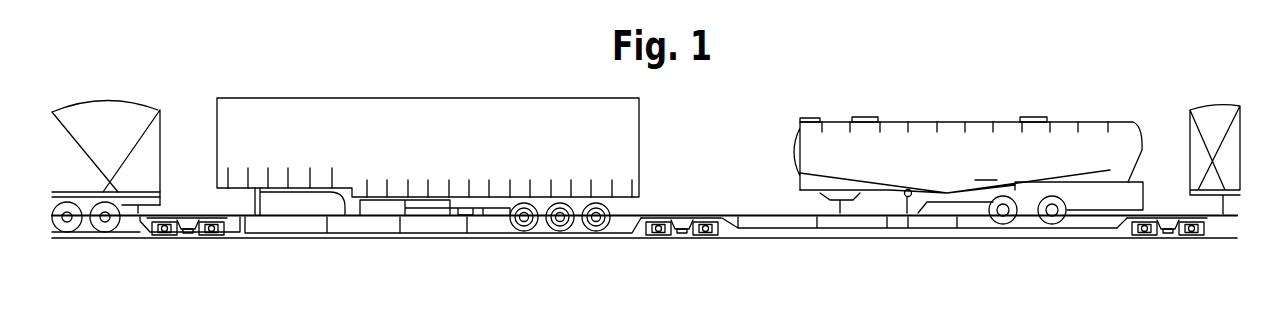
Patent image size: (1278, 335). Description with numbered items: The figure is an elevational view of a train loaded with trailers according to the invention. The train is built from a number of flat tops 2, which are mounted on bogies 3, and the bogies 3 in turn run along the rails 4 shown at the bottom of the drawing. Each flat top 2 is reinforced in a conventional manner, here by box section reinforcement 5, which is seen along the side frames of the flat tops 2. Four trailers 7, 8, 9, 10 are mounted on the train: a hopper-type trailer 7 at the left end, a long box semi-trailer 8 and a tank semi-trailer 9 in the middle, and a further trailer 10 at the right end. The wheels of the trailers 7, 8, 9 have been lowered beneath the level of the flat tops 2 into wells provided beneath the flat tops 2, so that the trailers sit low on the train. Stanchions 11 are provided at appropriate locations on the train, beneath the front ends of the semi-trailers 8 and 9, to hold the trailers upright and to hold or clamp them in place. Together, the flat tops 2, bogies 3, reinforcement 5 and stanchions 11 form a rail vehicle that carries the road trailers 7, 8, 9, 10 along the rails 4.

The flat top 2 is at (428, 218).
The bogie 3 is at (218, 240).
The rail 4 is at (1084, 238).
The box section reinforcement 5 is at (467, 225).
The trailer 7 is at (110, 122).
The trailer 8 is at (423, 97).
The trailer 9 is at (965, 122).
The trailer 10 is at (1210, 104).
The stanchion 11 is at (263, 203).